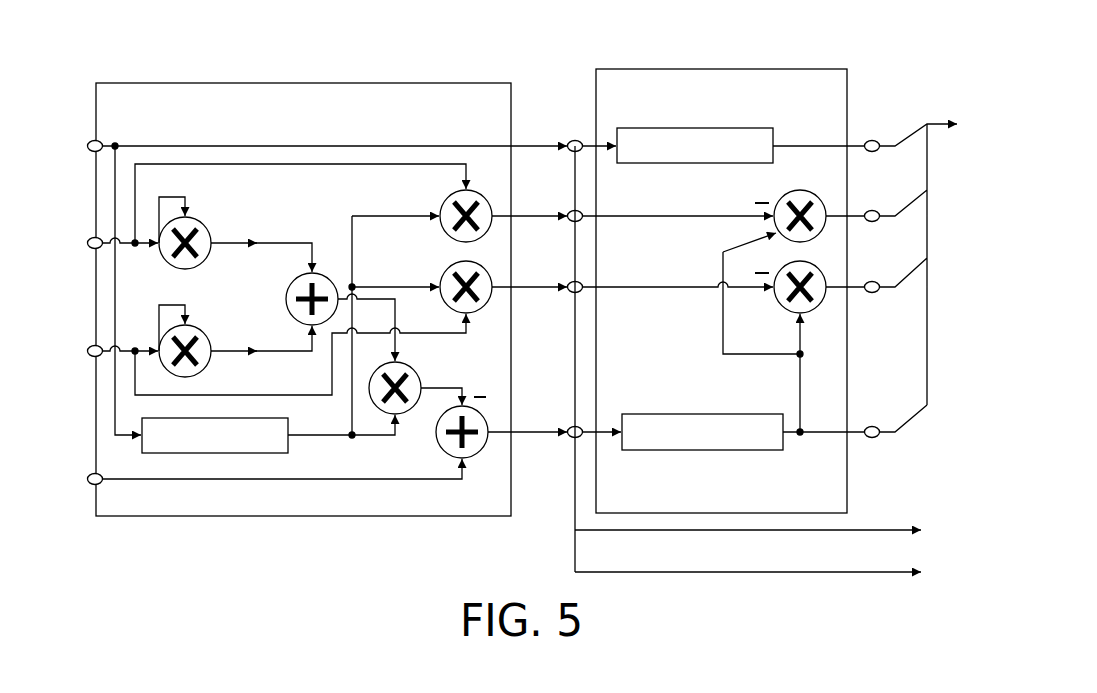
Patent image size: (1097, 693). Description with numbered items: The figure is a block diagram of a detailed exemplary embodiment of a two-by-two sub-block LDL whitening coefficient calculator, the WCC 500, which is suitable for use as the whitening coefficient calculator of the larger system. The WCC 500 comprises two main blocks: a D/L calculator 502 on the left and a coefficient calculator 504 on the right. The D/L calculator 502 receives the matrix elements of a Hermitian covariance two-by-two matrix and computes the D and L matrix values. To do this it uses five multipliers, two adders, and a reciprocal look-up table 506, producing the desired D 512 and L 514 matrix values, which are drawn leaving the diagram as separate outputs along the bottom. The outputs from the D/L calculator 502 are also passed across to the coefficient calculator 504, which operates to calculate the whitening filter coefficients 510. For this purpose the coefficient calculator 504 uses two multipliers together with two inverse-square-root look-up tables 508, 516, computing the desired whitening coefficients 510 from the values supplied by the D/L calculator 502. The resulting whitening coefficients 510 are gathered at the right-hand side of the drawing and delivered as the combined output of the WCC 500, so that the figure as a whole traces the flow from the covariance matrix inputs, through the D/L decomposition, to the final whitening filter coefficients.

The 2×2 sub-block LDL WCC 500 is at (872, 32).
The D/L calculator 502 is at (300, 83).
The coefficient calculator 504 is at (720, 69).
The (1/x) look-up table 506 is at (262, 453).
The (1/sqrt(x)) look-up table 508 is at (703, 450).
The whitening filter coefficients 510 is at (932, 120).
The D matrix values 512 is at (853, 529).
The L matrix values 514 is at (853, 572).
The (1/sqrt(x)) look-up table 516 is at (697, 163).